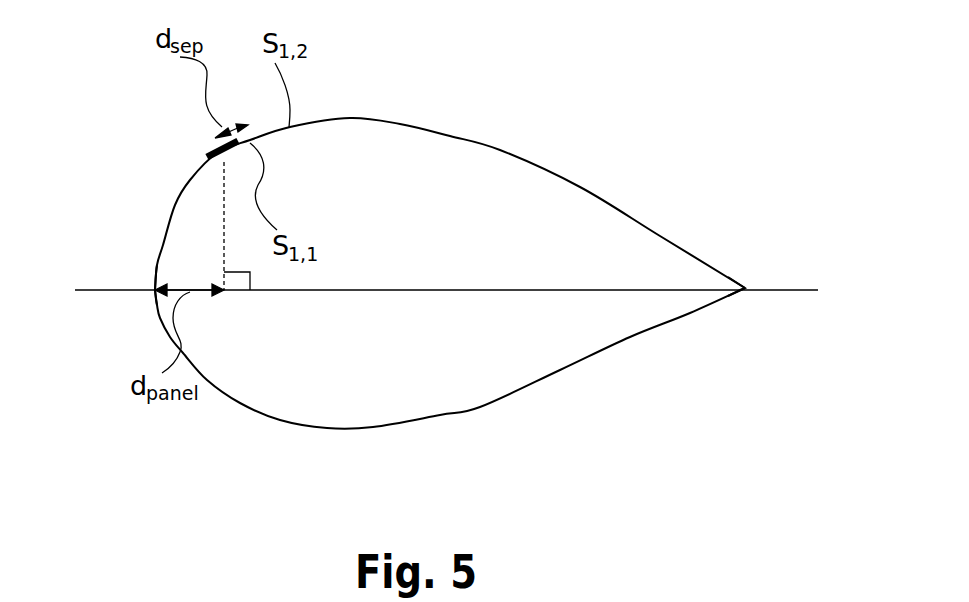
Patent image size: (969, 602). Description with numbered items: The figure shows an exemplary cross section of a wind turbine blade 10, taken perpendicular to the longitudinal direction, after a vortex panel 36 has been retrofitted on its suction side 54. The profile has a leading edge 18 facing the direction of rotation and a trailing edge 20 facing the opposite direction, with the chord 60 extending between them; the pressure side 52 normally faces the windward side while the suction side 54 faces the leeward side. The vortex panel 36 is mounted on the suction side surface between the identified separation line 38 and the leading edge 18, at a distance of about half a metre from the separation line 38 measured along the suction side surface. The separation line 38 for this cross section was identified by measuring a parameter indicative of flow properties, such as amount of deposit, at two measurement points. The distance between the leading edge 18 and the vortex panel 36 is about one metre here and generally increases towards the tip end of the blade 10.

The wind turbine blade 10 is at (123, 183).
The leading edge 18 is at (153, 289).
The trailing edge 20 is at (748, 287).
The vortex panel 36 is at (212, 150).
The separation line 38 is at (250, 142).
The pressure side 52 is at (468, 409).
The suction side 54 is at (502, 152).
The chord 60 is at (615, 290).